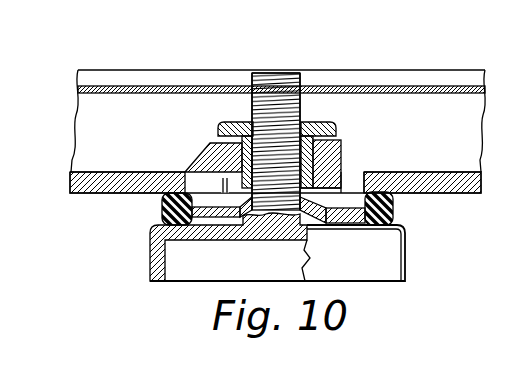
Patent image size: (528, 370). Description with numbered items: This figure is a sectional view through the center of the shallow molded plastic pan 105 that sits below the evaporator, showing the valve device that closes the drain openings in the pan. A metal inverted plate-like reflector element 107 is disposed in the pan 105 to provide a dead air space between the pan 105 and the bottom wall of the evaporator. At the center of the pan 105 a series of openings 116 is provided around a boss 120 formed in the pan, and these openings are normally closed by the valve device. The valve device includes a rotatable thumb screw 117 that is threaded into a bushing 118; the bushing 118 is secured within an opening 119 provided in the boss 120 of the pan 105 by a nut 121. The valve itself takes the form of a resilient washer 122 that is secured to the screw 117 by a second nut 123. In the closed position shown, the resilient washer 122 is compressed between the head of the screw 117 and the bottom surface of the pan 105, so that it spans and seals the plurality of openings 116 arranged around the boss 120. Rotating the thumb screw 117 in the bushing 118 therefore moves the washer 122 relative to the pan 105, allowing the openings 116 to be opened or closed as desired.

The pan 105 is at (452, 194).
The reflector element 107 is at (373, 86).
The openings 116 is at (351, 175).
The thumb screw 117 is at (271, 73).
The bushing 118 is at (240, 121).
The opening 119 is at (217, 163).
The boss 120 is at (346, 141).
The nut 121 is at (227, 121).
The resilient washer 122 is at (395, 210).
The nut 123 is at (246, 218).